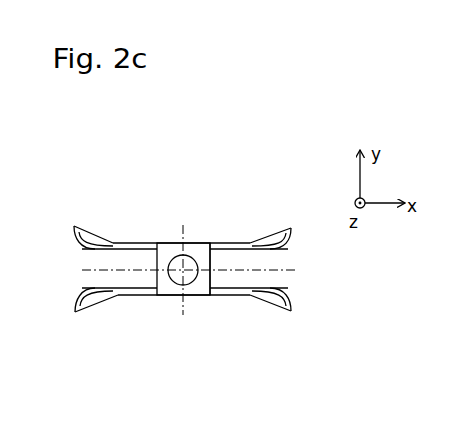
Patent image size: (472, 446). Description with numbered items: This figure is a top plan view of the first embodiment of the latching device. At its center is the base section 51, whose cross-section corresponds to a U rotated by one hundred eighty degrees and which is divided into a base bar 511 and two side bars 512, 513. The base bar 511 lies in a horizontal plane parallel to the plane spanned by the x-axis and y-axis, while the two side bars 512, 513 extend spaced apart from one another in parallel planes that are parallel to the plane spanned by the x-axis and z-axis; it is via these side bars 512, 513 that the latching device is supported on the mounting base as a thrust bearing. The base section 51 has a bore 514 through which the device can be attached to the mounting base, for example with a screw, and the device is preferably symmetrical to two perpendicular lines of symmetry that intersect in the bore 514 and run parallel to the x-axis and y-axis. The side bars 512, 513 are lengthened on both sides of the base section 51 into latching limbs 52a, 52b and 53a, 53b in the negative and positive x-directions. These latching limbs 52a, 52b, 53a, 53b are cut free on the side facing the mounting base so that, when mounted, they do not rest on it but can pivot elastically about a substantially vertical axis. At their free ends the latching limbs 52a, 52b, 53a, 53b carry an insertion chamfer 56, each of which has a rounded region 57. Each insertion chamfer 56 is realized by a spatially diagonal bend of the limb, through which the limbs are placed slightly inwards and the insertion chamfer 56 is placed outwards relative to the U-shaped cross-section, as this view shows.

The base section 51 is at (203, 296).
The base bar 511 is at (210, 291).
The side bar 512 is at (167, 297).
The side bar 513 is at (171, 242).
The bore 514 is at (193, 253).
The latching limb 52a is at (132, 297).
The latching limb 52b is at (232, 297).
The latching limb 53a is at (129, 242).
The latching limb 53b is at (224, 242).
The insertion chamfer 56 is at (92, 230).
The rounded region 57 is at (80, 250).